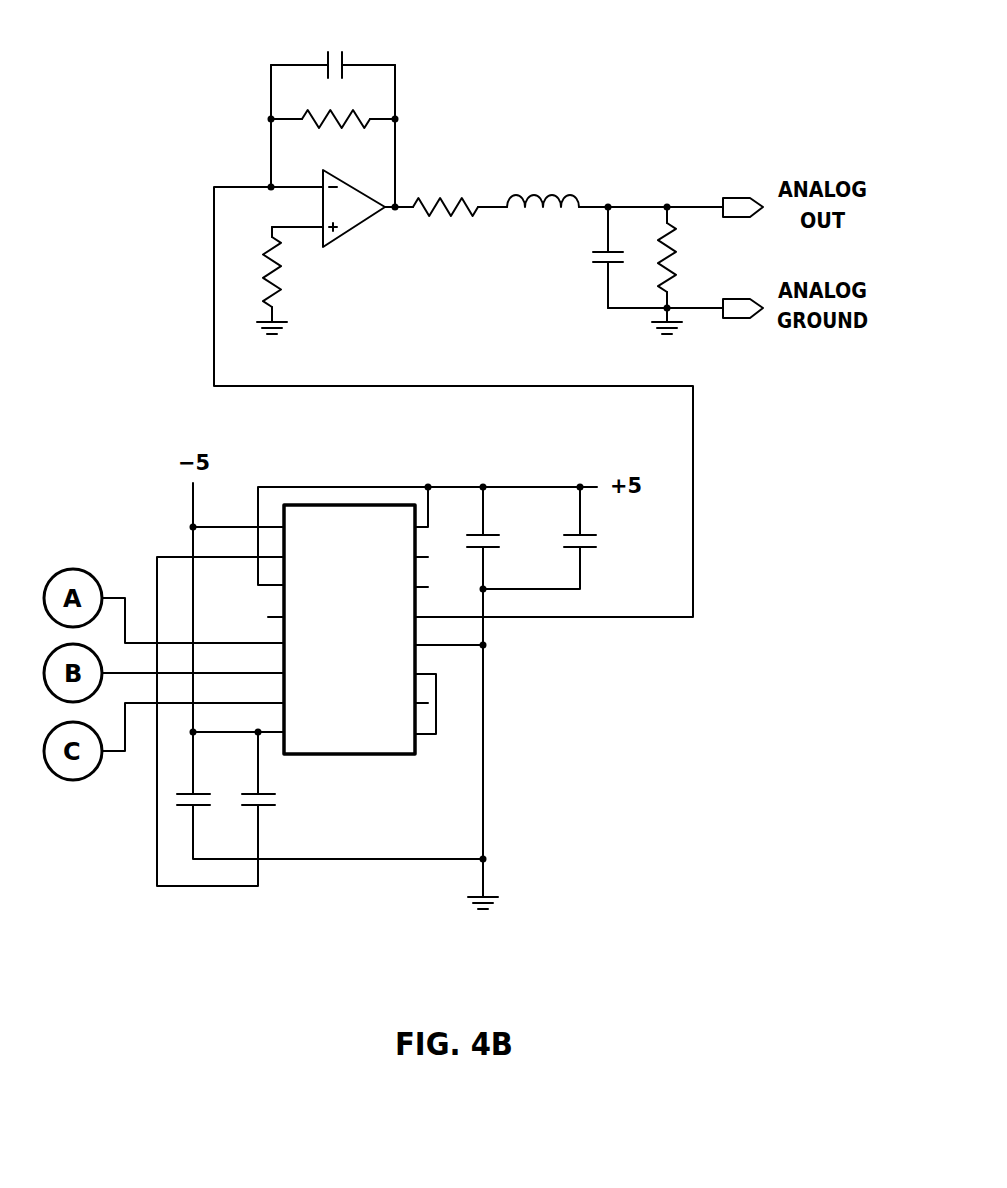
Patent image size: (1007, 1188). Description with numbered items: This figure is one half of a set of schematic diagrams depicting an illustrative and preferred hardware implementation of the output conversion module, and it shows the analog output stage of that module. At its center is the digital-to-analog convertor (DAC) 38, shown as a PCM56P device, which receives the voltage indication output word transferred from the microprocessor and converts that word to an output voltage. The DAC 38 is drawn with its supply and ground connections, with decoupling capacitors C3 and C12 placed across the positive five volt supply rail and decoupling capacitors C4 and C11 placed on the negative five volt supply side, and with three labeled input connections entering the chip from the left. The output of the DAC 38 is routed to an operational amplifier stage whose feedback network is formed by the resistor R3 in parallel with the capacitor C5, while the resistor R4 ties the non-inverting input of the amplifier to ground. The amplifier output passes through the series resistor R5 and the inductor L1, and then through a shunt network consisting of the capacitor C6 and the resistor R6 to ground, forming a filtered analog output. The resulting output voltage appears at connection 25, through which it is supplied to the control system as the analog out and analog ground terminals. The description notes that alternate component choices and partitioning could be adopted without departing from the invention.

The connection 25 is at (662, 228).
The digital-to-analog convertor (DAC) 38 is at (378, 754).
The feedback capacitor C5 is at (333, 52).
The feedback resistor R3 is at (333, 136).
The non-inverting input resistor to ground R4 is at (287, 280).
The output series resistor R5 is at (446, 192).
The filter inductor L1 is at (543, 187).
The filter capacitor C6 is at (592, 257).
The output load resistor R6 is at (681, 270).
The +5 V decoupling capacitor C3 is at (502, 541).
The +5 V decoupling capacitor C12 is at (562, 538).
The -5 V decoupling capacitor C4 is at (204, 791).
The decoupling capacitor C11 is at (281, 800).